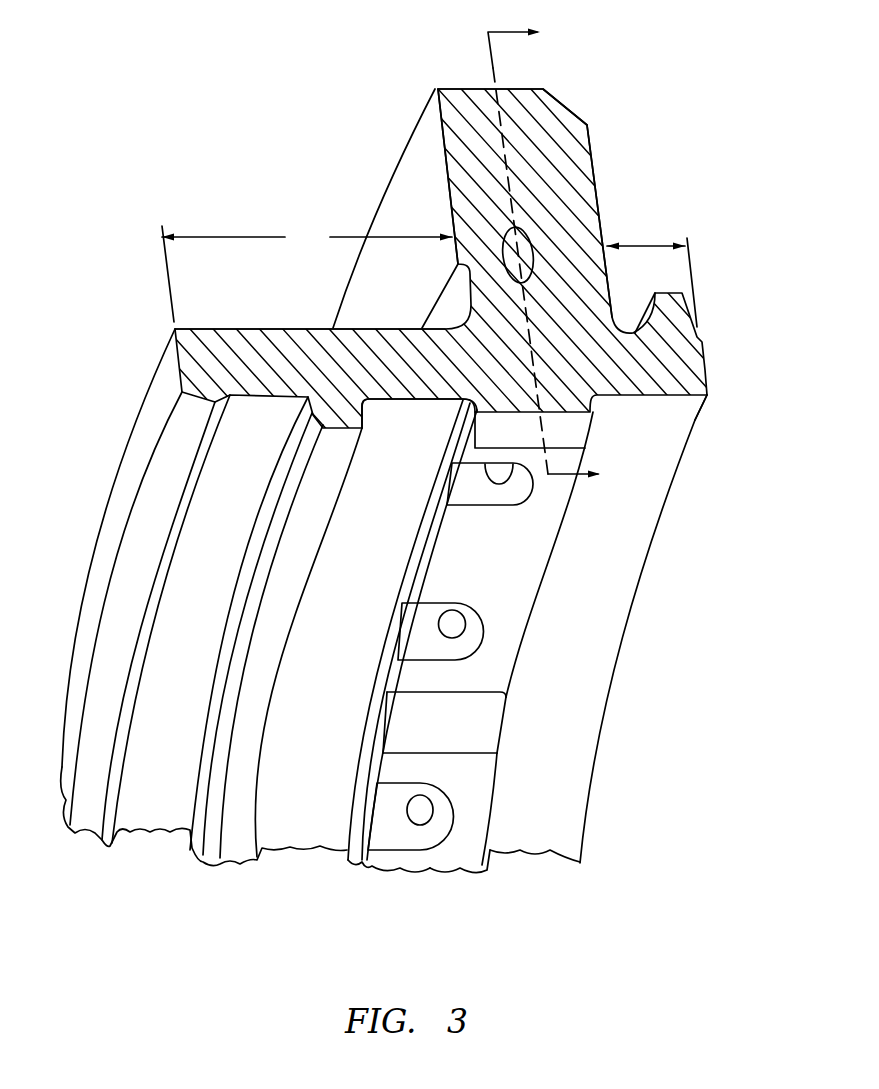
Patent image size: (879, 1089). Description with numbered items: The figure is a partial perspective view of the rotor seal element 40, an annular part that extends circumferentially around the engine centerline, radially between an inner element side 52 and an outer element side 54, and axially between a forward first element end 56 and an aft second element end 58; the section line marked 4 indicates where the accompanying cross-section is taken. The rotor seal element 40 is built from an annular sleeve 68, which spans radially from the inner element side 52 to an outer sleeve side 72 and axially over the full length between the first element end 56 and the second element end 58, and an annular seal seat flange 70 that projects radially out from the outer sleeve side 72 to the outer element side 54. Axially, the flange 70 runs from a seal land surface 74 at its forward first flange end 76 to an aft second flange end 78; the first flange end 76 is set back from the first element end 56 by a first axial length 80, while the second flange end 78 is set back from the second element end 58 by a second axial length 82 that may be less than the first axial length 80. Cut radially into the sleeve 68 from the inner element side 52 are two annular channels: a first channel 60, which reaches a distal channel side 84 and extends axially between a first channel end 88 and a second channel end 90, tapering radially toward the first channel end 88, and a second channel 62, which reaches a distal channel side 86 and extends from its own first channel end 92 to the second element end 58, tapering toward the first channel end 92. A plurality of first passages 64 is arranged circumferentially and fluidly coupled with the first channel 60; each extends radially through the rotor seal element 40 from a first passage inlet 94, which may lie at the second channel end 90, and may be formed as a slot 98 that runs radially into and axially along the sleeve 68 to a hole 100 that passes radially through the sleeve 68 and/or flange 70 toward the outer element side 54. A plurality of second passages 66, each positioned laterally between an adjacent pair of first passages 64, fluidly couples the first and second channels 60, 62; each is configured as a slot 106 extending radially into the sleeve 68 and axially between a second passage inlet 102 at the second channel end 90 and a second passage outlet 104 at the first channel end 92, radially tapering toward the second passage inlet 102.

The rotor seal element 40 is at (684, 61).
The section line 4- 4 is at (553, 254).
The inner element side 52 is at (323, 467).
The outer element side 54 is at (452, 88).
The first element end 56 is at (167, 378).
The second element end 58 is at (707, 367).
The first channel 60 is at (300, 825).
The second channel 62 is at (537, 820).
The first passages 64 is at (383, 825).
The second passages 66 is at (477, 730).
The annular sleeve 68 is at (253, 327).
The annular seal seat flange 70 is at (527, 88).
The outer sleeve side 72 is at (298, 327).
The seal land surface 74 is at (422, 145).
The first flange end 76 is at (407, 175).
The second flange end 78 is at (595, 155).
The first axial length 80 is at (307, 274).
The second axial length 82 is at (653, 246).
The distal channel side 84 is at (278, 802).
The distal channel side 86 is at (598, 622).
The first channel end 88 is at (367, 418).
The second channel end 90 is at (427, 548).
The first channel end 92 is at (570, 530).
The first passage inlet 94 is at (402, 655).
The slot 98 is at (397, 838).
The hole 100 is at (525, 243).
The second passage inlet 102 is at (375, 745).
The second passage outlet 104 is at (500, 742).
The slot 106 is at (488, 702).